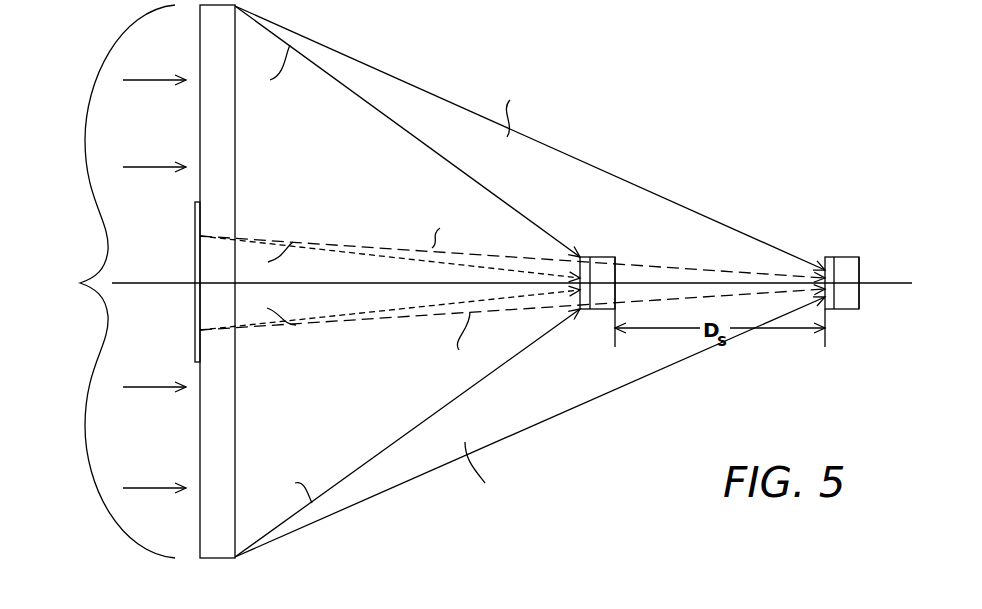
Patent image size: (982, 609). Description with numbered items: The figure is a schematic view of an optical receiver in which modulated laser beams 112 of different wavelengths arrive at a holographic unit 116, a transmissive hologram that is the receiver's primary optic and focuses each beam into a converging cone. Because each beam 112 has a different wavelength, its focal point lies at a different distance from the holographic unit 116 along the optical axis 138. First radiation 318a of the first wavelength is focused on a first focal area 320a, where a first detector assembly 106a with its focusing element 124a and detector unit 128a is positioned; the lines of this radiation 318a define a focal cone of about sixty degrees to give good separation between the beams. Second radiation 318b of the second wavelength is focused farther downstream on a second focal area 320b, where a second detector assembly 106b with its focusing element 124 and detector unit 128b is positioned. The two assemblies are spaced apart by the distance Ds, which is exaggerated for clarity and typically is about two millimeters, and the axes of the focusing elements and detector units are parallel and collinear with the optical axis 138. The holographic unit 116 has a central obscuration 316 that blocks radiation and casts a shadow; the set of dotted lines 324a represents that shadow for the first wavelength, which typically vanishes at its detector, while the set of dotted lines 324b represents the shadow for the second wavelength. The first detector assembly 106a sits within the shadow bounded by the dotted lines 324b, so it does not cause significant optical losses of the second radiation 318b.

The modulated laser beam 112 is at (118, 461).
The holographic unit 116 is at (215, 559).
The optical axis 138 is at (146, 283).
The central obscuration 316 is at (195, 301).
The first radiation 318a is at (343, 85).
The second radiation 318b is at (670, 190).
The set of dotted lines 324a is at (378, 248).
The set of dotted lines 324b is at (405, 318).
The first detector assembly 106a is at (587, 182).
The second detector assembly 106b is at (866, 190).
The focusing element 124a is at (586, 257).
The detector unit 128a is at (604, 257).
The focusing element 124 is at (830, 257).
The detector unit 128b is at (857, 257).
The first focal area 320a is at (558, 338).
The second focal area 320b is at (808, 334).